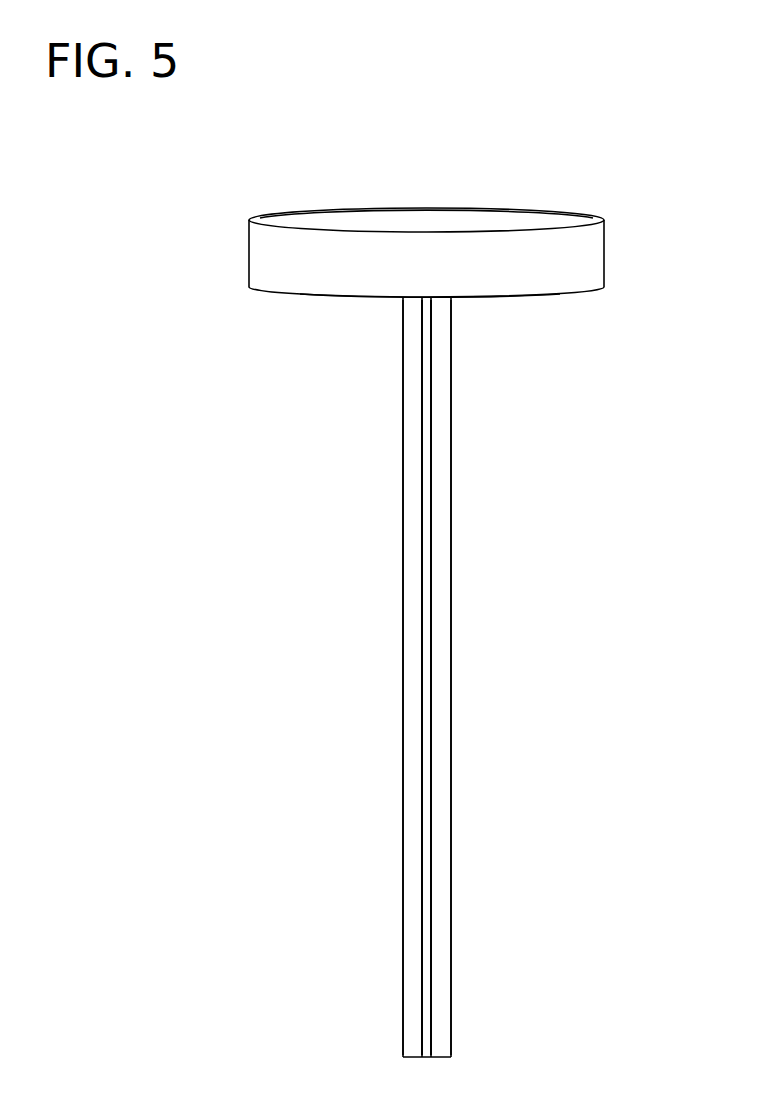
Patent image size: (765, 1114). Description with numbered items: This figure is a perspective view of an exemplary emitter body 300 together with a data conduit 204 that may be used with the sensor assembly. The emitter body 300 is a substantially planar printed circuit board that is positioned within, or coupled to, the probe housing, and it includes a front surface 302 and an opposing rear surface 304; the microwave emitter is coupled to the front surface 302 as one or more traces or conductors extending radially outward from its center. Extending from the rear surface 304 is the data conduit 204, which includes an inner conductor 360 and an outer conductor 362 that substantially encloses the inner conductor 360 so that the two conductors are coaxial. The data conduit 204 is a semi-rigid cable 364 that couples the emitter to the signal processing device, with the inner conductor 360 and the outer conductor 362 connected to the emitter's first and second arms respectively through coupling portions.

The emitter body 300 is at (604, 227).
The front surface 302 is at (518, 214).
The rear surface 304 is at (542, 295).
The data conduit 204 is at (470, 550).
The inner conductor 360 is at (430, 647).
The outer conductor 362 is at (403, 717).
The semi-rigid cable 364 is at (468, 908).